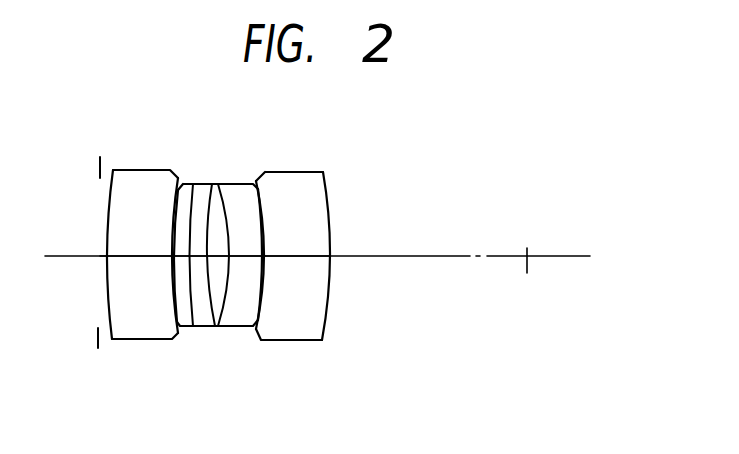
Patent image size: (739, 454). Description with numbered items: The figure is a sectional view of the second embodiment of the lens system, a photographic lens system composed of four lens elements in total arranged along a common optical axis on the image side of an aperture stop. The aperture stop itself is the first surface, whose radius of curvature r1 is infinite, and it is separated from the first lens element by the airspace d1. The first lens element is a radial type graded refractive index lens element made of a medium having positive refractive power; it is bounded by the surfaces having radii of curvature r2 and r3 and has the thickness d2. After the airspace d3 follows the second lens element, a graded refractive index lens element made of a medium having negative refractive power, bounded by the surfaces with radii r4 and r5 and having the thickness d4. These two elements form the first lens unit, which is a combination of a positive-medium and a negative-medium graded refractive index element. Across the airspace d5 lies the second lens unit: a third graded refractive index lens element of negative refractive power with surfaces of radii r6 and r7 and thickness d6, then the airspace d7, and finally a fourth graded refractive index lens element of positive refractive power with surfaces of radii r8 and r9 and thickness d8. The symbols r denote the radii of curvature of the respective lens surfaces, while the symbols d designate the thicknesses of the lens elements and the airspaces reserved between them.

The radius of curvature of first surface (aperture stop) r1 is at (98, 168).
The radius of curvature of second surface r2 is at (112, 170).
The radius of curvature of third surface r3 is at (179, 192).
The radius of curvature of fourth surface r4 is at (192, 188).
The radius of curvature of fifth surface r5 is at (209, 190).
The radius of curvature of sixth surface r6 is at (230, 211).
The radius of curvature of seventh surface r7 is at (259, 197).
The radius of curvature of eighth surface r8 is at (263, 223).
The radius of curvature of ninth surface r9 is at (327, 187).
The airspace between aperture stop and first lens element d1 is at (102, 258).
The thickness of first lens element d2 is at (137, 258).
The airspace between first and second lens elements d3 is at (176, 258).
The thickness of second lens element d4 is at (191, 258).
The airspace between second and third lens elements d5 is at (226, 258).
The thickness of third lens element d6 is at (263, 262).
The airspace between third and fourth lens elements d7 is at (264, 262).
The thickness of fourth lens element d8 is at (301, 259).